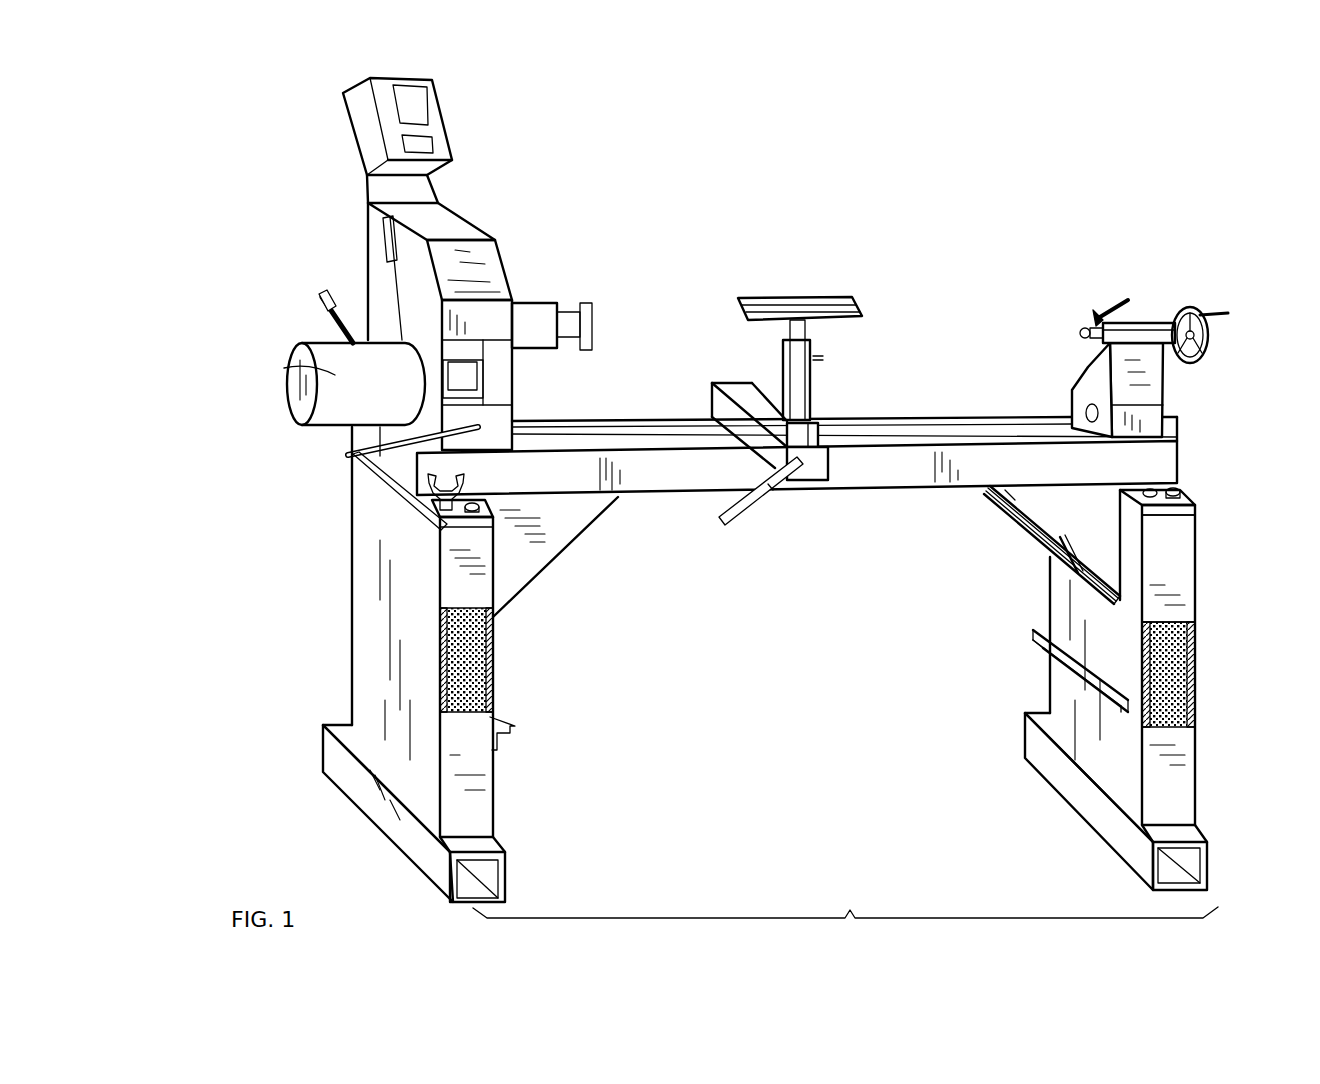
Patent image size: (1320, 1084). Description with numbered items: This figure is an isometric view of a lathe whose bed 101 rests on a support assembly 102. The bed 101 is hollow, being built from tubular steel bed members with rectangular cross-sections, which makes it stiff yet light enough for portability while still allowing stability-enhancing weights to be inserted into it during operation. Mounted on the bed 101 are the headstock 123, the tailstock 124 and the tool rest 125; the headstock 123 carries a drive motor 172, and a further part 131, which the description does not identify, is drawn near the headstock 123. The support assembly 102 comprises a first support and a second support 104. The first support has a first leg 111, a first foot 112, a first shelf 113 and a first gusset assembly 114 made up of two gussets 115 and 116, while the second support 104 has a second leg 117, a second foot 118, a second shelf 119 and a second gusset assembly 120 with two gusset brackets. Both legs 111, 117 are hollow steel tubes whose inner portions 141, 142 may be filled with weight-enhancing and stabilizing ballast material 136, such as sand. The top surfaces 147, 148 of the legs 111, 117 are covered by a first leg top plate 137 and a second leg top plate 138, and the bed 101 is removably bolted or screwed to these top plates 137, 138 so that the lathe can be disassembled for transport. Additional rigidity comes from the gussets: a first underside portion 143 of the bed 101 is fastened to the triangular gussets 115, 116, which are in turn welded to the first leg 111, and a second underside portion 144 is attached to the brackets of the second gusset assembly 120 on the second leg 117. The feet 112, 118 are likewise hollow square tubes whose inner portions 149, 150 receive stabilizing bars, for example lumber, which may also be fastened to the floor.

The bed 101 is at (898, 403).
The support assembly 102 is at (845, 933).
The second support 104 is at (483, 724).
The first leg 111 is at (1177, 780).
The first foot 112 is at (1053, 780).
The first shelf 113 is at (1033, 632).
The first gusset assembly 114 is at (1016, 554).
The gusset 115 is at (1062, 560).
The gusset 116 is at (1022, 505).
The second leg 117 is at (483, 806).
The second foot 118 is at (348, 780).
The second shelf 119 is at (510, 728).
The second gusset assembly 120 is at (547, 569).
The headstock 123 is at (485, 270).
The tailstock 124 is at (1165, 390).
The tool rest 125 is at (845, 344).
The lever 131 is at (345, 458).
The ballast material 136 is at (443, 673).
The first leg top plate 137 is at (1190, 500).
The second leg top plate 138 is at (352, 498).
The inner portion of first leg 141 is at (1160, 622).
The inner portion of second leg 142 is at (440, 607).
The first underside portion 143 is at (1047, 490).
The second underside portion 144 is at (558, 497).
The top surface of first leg 147 is at (1195, 513).
The top surface of second leg 148 is at (465, 511).
The inner portion of first foot 149 is at (1167, 868).
The inner portion of second foot 150 is at (470, 890).
The drive motor 172 is at (327, 376).